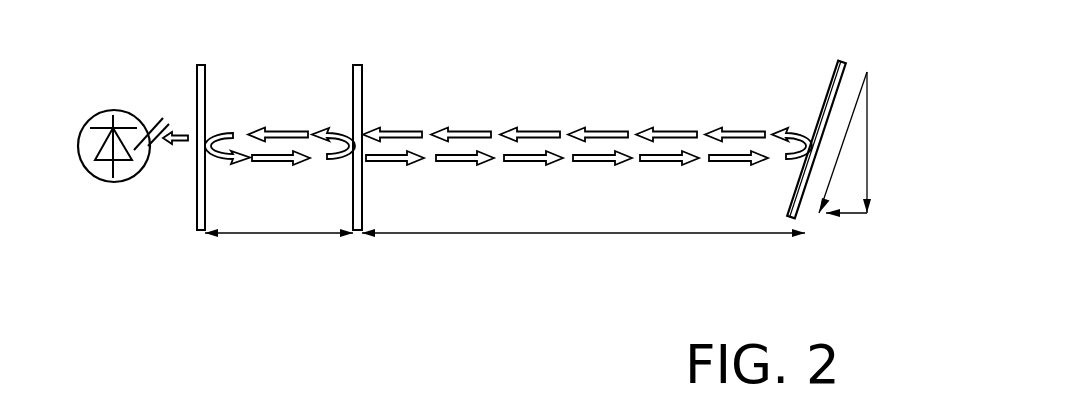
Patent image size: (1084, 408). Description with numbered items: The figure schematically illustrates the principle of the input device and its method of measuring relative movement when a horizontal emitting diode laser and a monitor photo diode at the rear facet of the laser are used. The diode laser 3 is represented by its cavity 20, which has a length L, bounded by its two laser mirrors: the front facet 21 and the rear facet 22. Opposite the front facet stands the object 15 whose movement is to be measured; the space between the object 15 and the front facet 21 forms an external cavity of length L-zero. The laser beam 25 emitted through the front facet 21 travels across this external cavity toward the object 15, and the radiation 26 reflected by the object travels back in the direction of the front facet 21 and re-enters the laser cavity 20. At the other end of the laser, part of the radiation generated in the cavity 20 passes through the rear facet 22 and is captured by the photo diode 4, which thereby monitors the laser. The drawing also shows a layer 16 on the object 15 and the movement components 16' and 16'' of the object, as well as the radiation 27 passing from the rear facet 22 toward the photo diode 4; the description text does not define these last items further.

The diode laser 3 is at (284, 18).
The photo diode 4 is at (87, 133).
The object 15 is at (827, 96).
The reflective layer 16 is at (783, 139).
The horizontal light component 16' is at (850, 180).
The vertical light component 16'' is at (904, 142).
The cavity 20 is at (283, 128).
The front facet 21 is at (362, 75).
The rear facet 22 is at (197, 74).
The laser beam 25 is at (533, 163).
The reflected radiation 26 is at (538, 129).
The light returning to source 27 is at (180, 144).